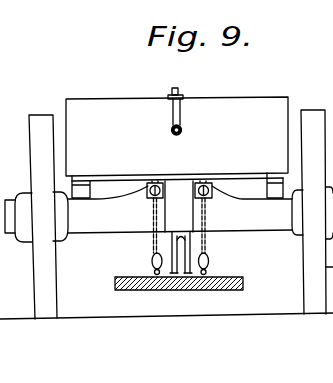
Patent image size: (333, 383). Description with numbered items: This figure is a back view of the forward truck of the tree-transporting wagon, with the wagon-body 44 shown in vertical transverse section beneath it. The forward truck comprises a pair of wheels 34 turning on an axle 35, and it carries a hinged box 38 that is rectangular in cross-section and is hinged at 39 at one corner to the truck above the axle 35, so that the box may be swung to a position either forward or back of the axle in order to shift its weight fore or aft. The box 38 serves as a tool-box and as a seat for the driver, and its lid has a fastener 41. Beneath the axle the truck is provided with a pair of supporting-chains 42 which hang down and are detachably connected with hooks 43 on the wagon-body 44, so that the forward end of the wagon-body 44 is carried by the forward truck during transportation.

The wheels 34 is at (35, 263).
The axle 35 is at (127, 222).
The hinged box 38 is at (97, 104).
The hinge 39 is at (85, 177).
The fastener 41 is at (180, 93).
The supporting-chains 42 is at (148, 250).
The hooks 43 is at (208, 267).
The wagon-body 44 is at (188, 290).